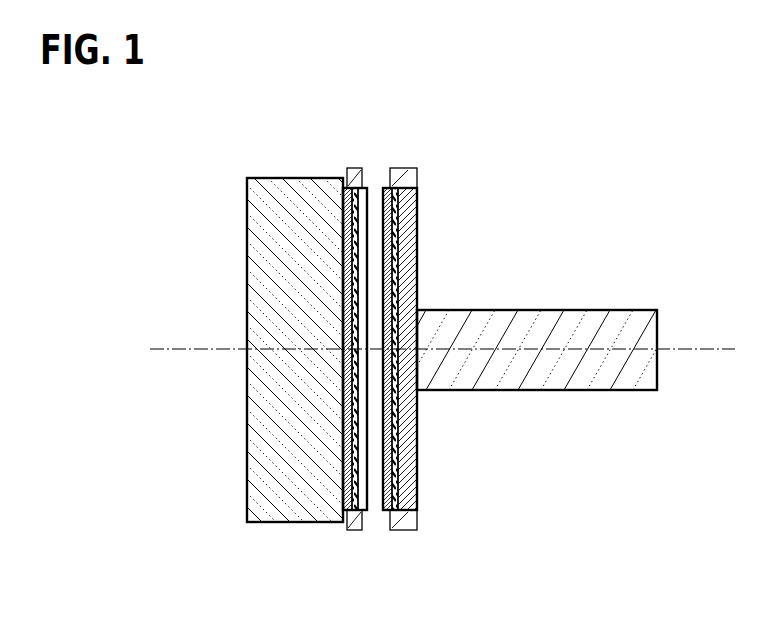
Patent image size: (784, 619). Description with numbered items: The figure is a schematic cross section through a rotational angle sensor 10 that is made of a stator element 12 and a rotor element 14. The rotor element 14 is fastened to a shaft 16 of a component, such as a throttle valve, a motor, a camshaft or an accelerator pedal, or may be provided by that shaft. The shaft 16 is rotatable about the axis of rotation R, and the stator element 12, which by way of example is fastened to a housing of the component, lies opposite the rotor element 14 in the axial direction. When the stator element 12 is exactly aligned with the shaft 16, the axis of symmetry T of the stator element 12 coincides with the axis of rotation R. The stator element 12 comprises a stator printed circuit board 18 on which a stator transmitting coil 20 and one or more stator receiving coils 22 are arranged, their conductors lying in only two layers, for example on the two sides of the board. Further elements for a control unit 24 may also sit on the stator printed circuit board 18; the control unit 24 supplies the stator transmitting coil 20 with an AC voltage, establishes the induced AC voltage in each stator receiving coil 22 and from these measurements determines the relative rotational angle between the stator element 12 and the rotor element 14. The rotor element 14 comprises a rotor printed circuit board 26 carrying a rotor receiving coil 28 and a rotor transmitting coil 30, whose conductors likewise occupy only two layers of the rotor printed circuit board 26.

The rotational angle sensor 10 is at (442, 330).
The stator element 12 is at (261, 307).
The rotor element 14 is at (360, 351).
The shaft 16 is at (549, 380).
The stator printed circuit board 18 is at (347, 268).
The stator transmitting coil 20 is at (367, 203).
The stator receiving coil 22 is at (343, 195).
The control unit 24 is at (270, 490).
The rotor printed circuit board 26 is at (411, 256).
The rotor receiving coil 28 is at (414, 477).
The rotor transmitting coil 30 is at (381, 487).
The axis of symmetry T is at (188, 355).
The axis of rotation R is at (700, 352).